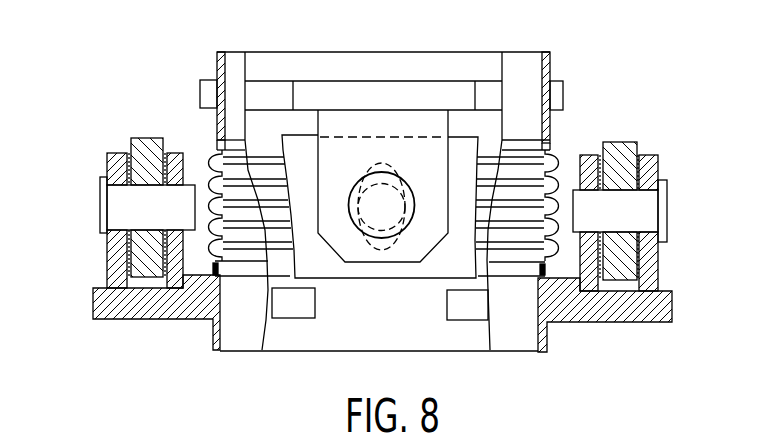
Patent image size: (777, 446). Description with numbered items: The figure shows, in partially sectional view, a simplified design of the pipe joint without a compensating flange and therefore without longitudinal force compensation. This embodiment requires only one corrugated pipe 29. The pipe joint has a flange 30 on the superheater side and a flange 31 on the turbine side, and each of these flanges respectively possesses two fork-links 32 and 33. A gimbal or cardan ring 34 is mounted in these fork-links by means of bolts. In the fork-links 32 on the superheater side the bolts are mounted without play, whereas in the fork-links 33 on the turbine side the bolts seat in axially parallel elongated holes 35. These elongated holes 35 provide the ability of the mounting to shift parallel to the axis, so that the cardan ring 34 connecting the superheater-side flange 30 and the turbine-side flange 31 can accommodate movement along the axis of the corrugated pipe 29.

The corrugated pipe 29 is at (522, 182).
The flange on superheater side 30 is at (172, 322).
The flange on the turbine side 31 is at (553, 70).
The fork-links on the superheater side 32 is at (160, 156).
The fork-links on the turbine side 33 is at (422, 240).
The gimbal or cardan ring 34 is at (200, 155).
The elongated holes 35 is at (380, 241).